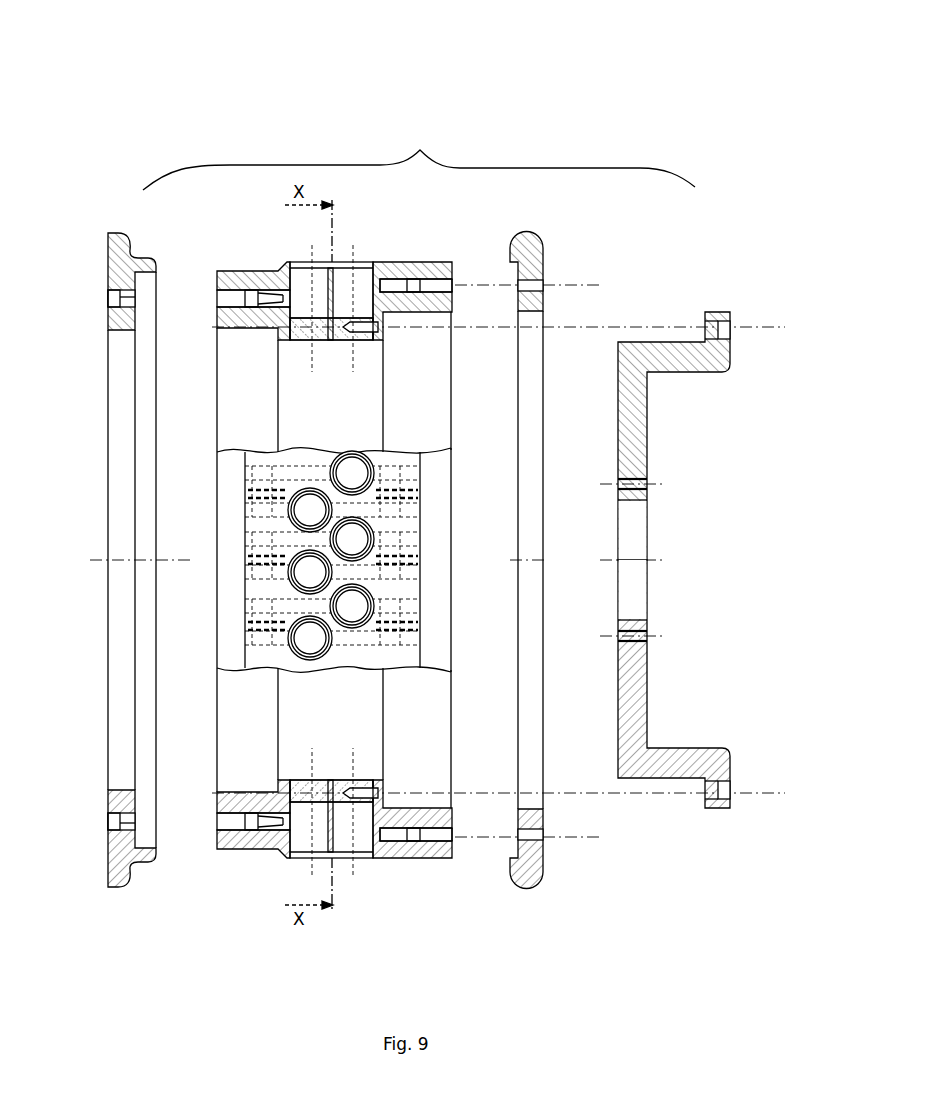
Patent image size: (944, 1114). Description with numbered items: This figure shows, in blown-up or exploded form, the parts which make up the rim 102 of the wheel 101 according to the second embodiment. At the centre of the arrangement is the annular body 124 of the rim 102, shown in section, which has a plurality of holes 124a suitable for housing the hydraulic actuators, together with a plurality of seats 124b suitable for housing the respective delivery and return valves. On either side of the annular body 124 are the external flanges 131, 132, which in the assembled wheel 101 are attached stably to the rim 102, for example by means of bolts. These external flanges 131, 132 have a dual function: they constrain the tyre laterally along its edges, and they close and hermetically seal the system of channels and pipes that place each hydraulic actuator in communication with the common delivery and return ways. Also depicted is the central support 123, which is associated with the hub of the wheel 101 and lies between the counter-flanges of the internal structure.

The wheel 101 is at (566, 64).
The rim 102 is at (419, 156).
The central support 123 is at (643, 438).
The annular body 124 is at (420, 262).
The holes 124a is at (295, 283).
The seats 124b is at (440, 284).
The external flange 131 is at (112, 253).
The external flange 132 is at (543, 253).